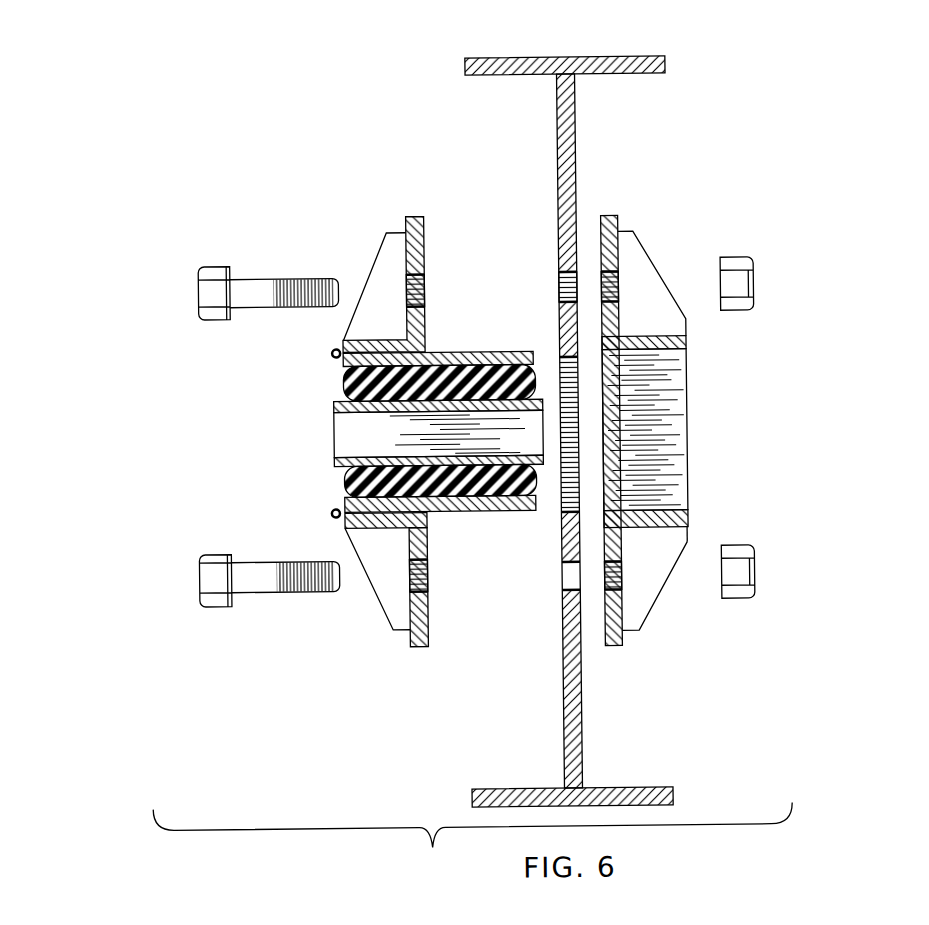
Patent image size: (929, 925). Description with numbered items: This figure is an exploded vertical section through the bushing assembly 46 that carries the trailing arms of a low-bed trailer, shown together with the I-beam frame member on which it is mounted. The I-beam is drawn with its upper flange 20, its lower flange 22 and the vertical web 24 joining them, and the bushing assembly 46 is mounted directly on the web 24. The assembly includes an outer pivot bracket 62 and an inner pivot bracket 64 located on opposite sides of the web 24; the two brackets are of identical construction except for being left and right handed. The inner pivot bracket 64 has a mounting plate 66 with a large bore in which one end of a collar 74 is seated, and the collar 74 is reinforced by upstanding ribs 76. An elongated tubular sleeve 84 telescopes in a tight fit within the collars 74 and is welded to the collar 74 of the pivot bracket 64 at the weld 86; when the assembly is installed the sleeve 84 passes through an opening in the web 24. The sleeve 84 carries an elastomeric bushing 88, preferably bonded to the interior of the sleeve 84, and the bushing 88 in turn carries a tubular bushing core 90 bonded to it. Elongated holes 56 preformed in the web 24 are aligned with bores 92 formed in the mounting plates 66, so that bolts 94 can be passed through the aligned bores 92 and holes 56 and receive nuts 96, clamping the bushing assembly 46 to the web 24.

The upper flange 20 is at (611, 56).
The lower flange 22 is at (619, 788).
The web 24 is at (580, 105).
The bushing assembly 46 is at (677, 214).
The holes 56 is at (562, 272).
The outer pivot bracket 62 is at (699, 517).
The inner pivot bracket 64 is at (381, 248).
The mounting plate 66 is at (404, 641).
The collar 74 is at (342, 518).
The upstanding ribs 76 is at (371, 274).
The tubular sleeve 84 is at (468, 351).
The weld 86 is at (333, 352).
The elastomeric bushing 88 is at (344, 384).
The bushing core 90 is at (333, 458).
The bores 92 is at (426, 273).
The bolts 94 is at (258, 304).
The nuts 96 is at (755, 274).